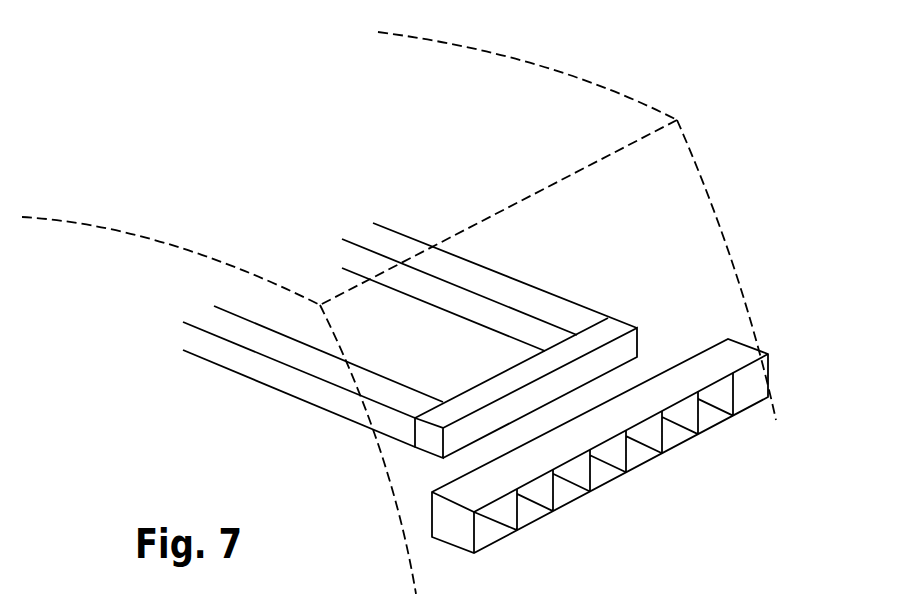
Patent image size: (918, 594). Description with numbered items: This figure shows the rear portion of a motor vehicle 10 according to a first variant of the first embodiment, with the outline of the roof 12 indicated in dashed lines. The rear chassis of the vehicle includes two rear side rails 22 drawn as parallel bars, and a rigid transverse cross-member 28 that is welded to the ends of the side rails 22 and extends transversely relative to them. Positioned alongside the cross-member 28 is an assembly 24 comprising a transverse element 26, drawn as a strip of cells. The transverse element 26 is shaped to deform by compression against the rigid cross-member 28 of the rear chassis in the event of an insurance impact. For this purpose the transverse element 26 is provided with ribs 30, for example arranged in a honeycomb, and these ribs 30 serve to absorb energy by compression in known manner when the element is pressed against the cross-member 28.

The motor vehicle 10 is at (239, 86).
The roof 12 is at (538, 88).
The rear side rails 22 is at (540, 307).
The stiffening element 24 is at (790, 325).
The transverse element 26 is at (682, 449).
The rigid transverse cross-member 28 is at (511, 383).
The ribs 30 is at (616, 457).